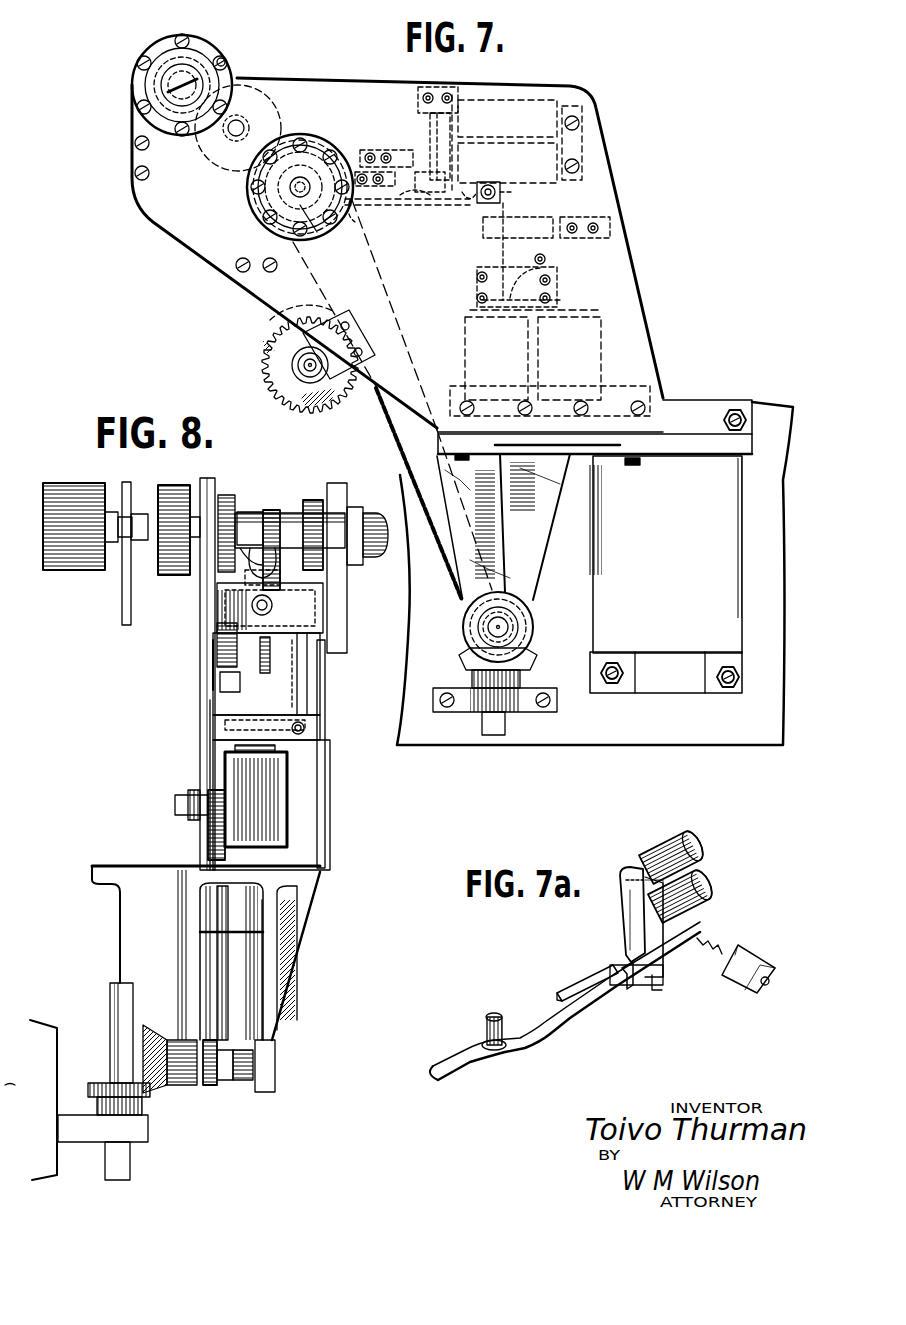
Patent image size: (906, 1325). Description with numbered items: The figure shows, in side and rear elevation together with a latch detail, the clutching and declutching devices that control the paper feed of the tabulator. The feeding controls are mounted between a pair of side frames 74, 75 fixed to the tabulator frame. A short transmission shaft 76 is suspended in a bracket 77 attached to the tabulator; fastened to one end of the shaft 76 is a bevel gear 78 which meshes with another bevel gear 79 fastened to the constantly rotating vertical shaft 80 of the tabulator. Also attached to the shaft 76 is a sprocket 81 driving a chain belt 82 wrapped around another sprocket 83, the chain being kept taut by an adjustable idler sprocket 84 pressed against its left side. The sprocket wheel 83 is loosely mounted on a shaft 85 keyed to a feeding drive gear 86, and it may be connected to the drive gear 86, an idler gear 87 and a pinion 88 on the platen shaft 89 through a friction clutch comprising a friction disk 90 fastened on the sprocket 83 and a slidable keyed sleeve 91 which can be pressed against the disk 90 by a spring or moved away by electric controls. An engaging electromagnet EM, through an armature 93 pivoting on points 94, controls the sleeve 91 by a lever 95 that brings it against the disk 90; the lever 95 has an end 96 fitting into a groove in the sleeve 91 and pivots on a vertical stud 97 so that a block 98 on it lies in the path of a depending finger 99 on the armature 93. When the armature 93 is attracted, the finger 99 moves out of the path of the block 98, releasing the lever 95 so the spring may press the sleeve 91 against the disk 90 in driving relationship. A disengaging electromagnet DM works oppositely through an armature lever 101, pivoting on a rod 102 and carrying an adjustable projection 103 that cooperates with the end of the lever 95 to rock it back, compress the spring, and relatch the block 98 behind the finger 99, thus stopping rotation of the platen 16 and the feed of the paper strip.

In FIG. 8, the platen 16 is at (70, 495).
In FIG. 8, the side frame 74 is at (207, 737).
In FIG. 7, the side frame 75 is at (622, 262).
In FIG. 8, the side frame 75 is at (318, 792).
In FIG. 7, the transmission shaft 76 is at (508, 625).
In FIG. 8, the transmission shaft 76 is at (240, 1082).
In FIG. 7, the bracket 77 is at (538, 572).
In FIG. 8, the bracket 77 is at (268, 1013).
In FIG. 7, the bevel gear 78 is at (533, 639).
In FIG. 8, the bevel gear 78 is at (160, 1090).
In FIG. 7, the bevel gear 79 is at (537, 660).
In FIG. 8, the bevel gear 79 is at (95, 1092).
In FIG. 7, the vertical shaft 80 is at (506, 726).
In FIG. 8, the vertical shaft 80 is at (130, 1160).
In FIG. 7, the sprocket 81 is at (470, 605).
In FIG. 8, the sprocket 81 is at (210, 1086).
In FIG. 7, the chain belt 82 is at (405, 478).
In FIG. 8, the chain belt 82 is at (222, 984).
In FIG. 7, the sprocket wheel 83 is at (324, 222).
In FIG. 8, the sprocket wheel 83 is at (212, 670).
In FIG. 7, the adjustable idler sprocket 84 is at (264, 366).
In FIG. 8, the adjustable idler sprocket 84 is at (210, 835).
In FIG. 7, the shaft 85 is at (270, 218).
In FIG. 7, the feeding drive gear 86 is at (300, 140).
In FIG. 8, the feeding drive gear 86 is at (268, 668).
In FIG. 7, the idler gear 87 is at (263, 95).
In FIG. 7, the pinion 88 is at (228, 60).
In FIG. 8, the pinion 88 is at (272, 515).
In FIG. 7, the platen shaft 89 is at (196, 80).
In FIG. 8, the platen shaft 89 is at (130, 505).
In FIG. 8, the friction disk 90 is at (230, 675).
In FIG. 7, the slidable keyed sleeve 91 is at (280, 190).
In FIG. 8, the slidable keyed sleeve 91 is at (232, 642).
In FIG. 7, the armature 93 is at (430, 130).
In FIG. 8, the armature 93 is at (248, 525).
In FIG. 7A, the armature 93 is at (626, 882).
In FIG. 7, the pivot points 94 is at (418, 108).
In FIG. 7, the lever 95 is at (395, 205).
In FIG. 7A, the lever 95 is at (525, 1020).
In FIG. 7A, the lever end 96 is at (430, 1071).
In FIG. 7, the vertical stud 97 is at (365, 207).
In FIG. 7A, the vertical stud 97 is at (488, 1020).
In FIG. 7, the block 98 is at (400, 171).
In FIG. 7A, the block 98 is at (575, 985).
In FIG. 7A, the depending finger 99 is at (628, 988).
In FIG. 7, the armature lever 101 is at (500, 240).
In FIG. 8, the armature lever 101 is at (300, 678).
In FIG. 7, the rod 102 is at (545, 255).
In FIG. 8, the rod 102 is at (303, 733).
In FIG. 7, the adjustable projection 103 is at (502, 197).
In FIG. 7A, the adjustable projection 103 is at (700, 942).
In FIG. 7, the engaging electromagnet EM is at (512, 100).
In FIG. 8, the engaging electromagnet EM is at (258, 505).
In FIG. 7A, the engaging electromagnet EM is at (668, 858).
In FIG. 7, the disengaging electromagnet DM is at (598, 355).
In FIG. 8, the disengaging electromagnet DM is at (282, 813).